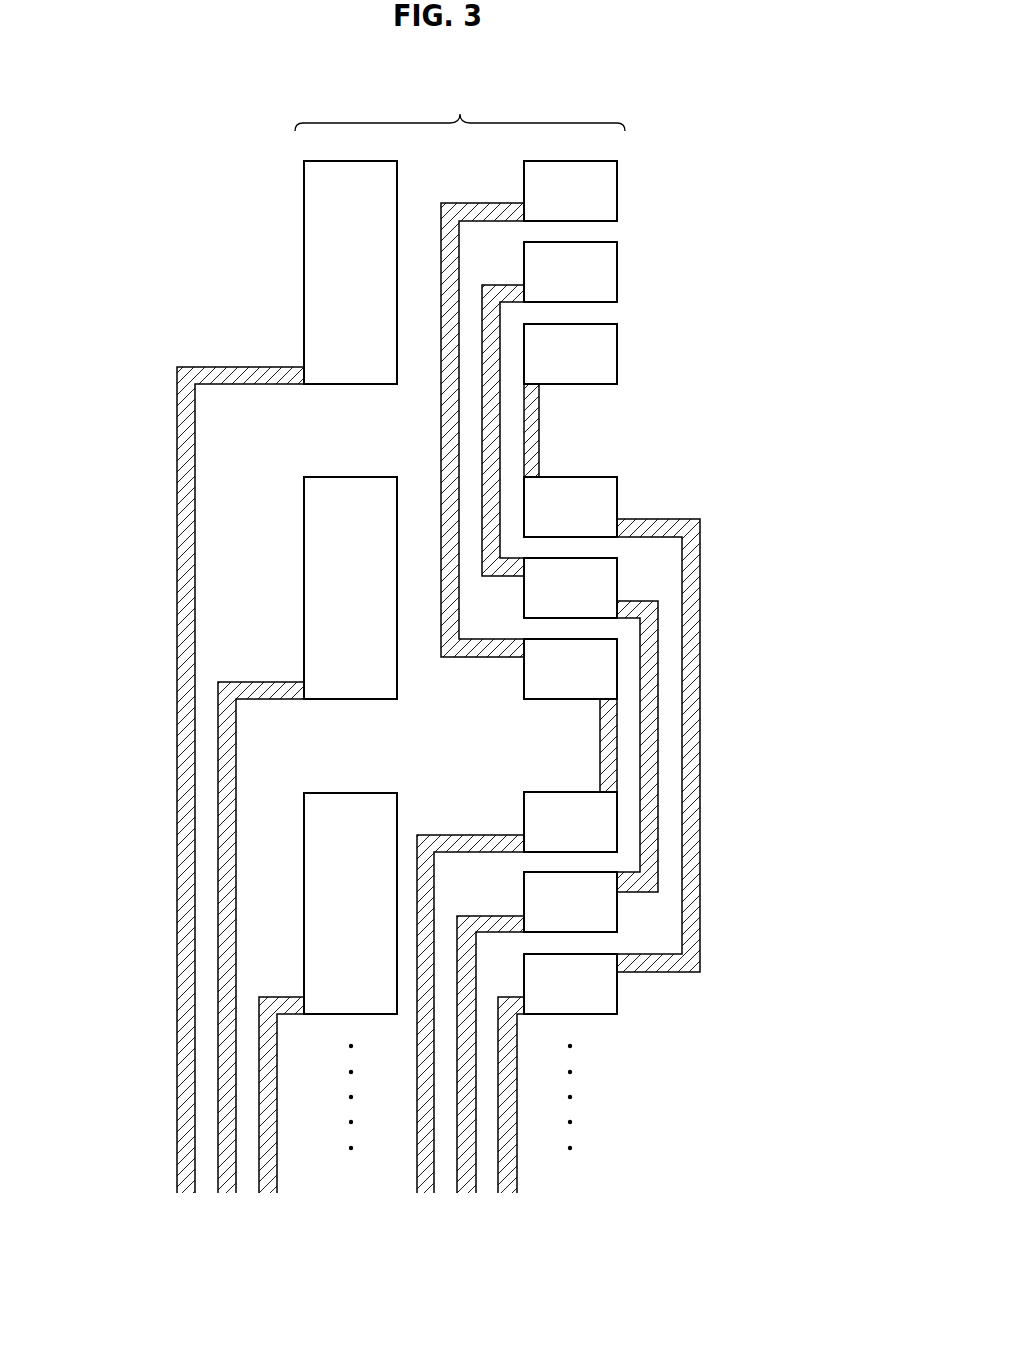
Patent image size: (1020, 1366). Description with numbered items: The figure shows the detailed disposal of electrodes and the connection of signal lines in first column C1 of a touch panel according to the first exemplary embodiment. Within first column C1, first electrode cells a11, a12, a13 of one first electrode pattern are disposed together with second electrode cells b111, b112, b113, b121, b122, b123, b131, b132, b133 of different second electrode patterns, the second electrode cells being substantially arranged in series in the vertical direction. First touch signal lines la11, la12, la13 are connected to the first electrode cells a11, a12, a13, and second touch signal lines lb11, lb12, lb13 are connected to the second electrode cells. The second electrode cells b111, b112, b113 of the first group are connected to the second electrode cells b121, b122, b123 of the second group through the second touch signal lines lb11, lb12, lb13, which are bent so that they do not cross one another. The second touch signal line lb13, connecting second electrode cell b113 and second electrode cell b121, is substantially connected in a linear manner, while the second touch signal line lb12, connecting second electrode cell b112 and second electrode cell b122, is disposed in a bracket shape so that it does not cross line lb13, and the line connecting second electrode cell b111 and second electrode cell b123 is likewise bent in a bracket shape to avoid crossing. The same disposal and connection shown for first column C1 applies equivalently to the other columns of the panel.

The first column C1 is at (460, 107).
The first electrode cell a11 is at (350, 272).
The first electrode cell a12 is at (350, 588).
The first electrode cell a13 is at (350, 903).
The second electrode cell b111 is at (570, 191).
The second electrode cell b112 is at (570, 272).
The second electrode cell b113 is at (570, 354).
The second electrode cell b121 is at (570, 507).
The second electrode cell b122 is at (570, 588).
The second electrode cell b123 is at (570, 669).
The second electrode cell b131 is at (570, 822).
The second electrode cell b132 is at (570, 902).
The second electrode cell b133 is at (570, 984).
The first touch signal line la11 is at (178, 603).
The first touch signal line la12 is at (236, 740).
The first touch signal line la13 is at (266, 1070).
The second touch signal line lb11 is at (452, 205).
The second touch signal line lb12 is at (497, 314).
The second touch signal line lb13 is at (540, 425).